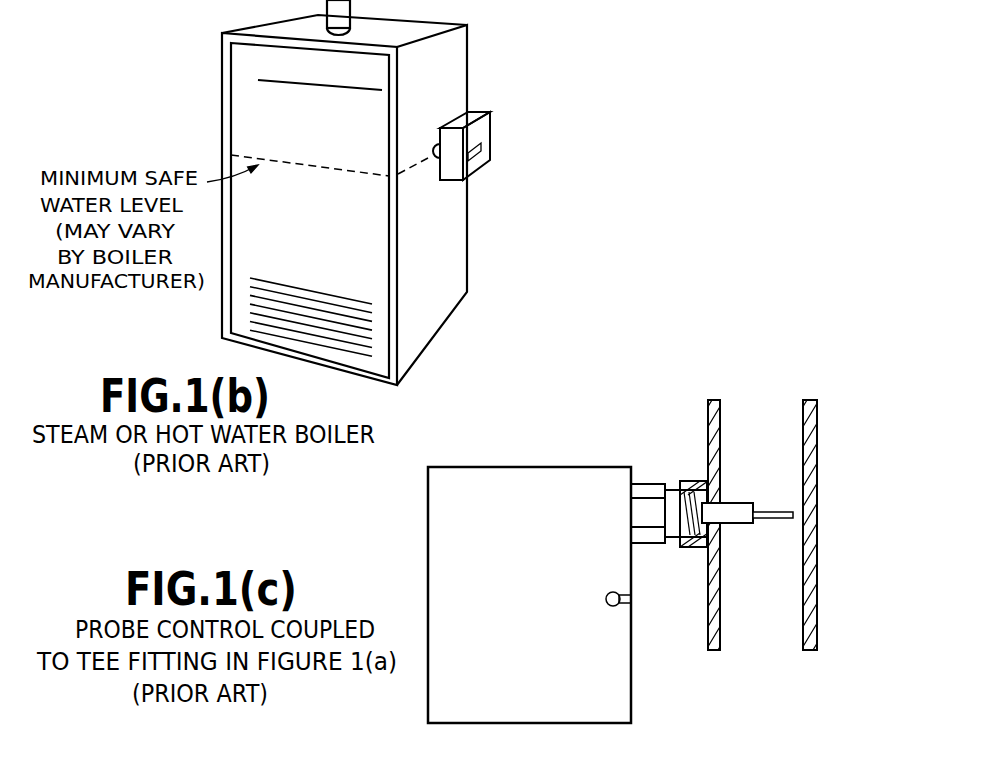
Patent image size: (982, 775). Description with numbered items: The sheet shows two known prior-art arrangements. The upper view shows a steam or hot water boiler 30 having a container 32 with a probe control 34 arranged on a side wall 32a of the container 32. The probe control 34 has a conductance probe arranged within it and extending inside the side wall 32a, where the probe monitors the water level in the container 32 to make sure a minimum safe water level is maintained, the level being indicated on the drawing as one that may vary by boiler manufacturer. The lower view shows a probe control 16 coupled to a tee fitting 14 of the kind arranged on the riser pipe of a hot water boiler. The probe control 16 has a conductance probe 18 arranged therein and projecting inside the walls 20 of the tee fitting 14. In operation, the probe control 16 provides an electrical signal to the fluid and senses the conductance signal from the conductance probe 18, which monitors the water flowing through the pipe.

In FIG. 1B, the steam or hot water boiler 30 is at (446, 257).
In FIG. 1B, the container 32 is at (468, 213).
In FIG. 1B, the side wall 32a is at (452, 65).
In FIG. 1B, the probe control 34 is at (543, 118).
In FIG. 1C, the tee fitting 14 is at (678, 451).
In FIG. 1C, the probe control 16 is at (517, 582).
In FIG. 1C, the conductance probe 18 is at (732, 493).
In FIG. 1C, the walls 20 is at (819, 450).